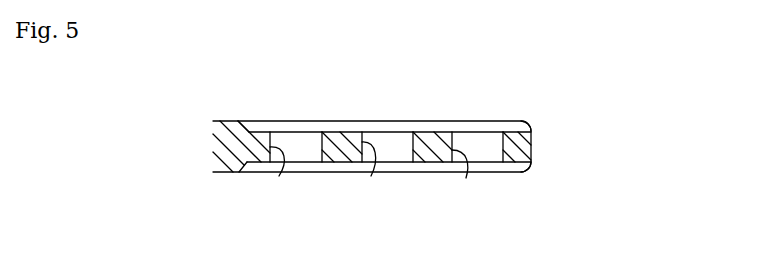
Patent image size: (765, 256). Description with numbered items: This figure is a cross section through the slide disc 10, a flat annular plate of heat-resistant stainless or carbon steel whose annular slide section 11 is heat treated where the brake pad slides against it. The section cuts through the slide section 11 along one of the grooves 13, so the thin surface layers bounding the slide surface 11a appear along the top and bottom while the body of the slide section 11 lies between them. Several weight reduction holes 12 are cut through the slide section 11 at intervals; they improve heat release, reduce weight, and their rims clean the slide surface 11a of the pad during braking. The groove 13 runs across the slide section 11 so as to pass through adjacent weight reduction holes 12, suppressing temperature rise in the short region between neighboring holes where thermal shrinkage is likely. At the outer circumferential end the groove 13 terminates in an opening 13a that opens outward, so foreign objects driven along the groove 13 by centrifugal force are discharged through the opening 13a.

The slide disc 10 is at (498, 106).
The slide section 11 is at (445, 118).
The slide surface 11a is at (393, 123).
The weight reduction hole 12 is at (279, 176).
The groove 13 is at (336, 131).
The opening 13a is at (528, 124).